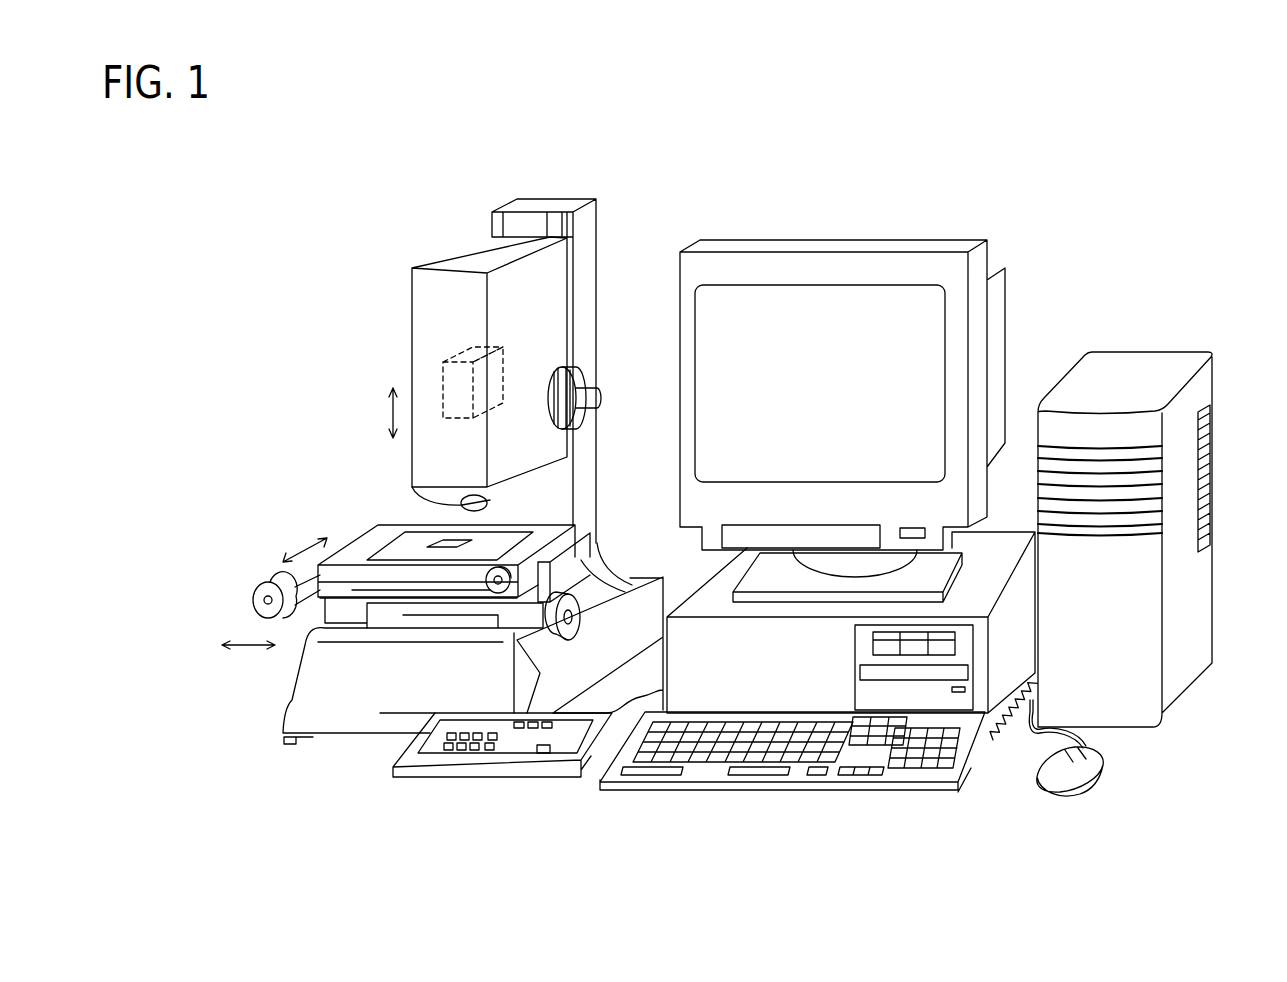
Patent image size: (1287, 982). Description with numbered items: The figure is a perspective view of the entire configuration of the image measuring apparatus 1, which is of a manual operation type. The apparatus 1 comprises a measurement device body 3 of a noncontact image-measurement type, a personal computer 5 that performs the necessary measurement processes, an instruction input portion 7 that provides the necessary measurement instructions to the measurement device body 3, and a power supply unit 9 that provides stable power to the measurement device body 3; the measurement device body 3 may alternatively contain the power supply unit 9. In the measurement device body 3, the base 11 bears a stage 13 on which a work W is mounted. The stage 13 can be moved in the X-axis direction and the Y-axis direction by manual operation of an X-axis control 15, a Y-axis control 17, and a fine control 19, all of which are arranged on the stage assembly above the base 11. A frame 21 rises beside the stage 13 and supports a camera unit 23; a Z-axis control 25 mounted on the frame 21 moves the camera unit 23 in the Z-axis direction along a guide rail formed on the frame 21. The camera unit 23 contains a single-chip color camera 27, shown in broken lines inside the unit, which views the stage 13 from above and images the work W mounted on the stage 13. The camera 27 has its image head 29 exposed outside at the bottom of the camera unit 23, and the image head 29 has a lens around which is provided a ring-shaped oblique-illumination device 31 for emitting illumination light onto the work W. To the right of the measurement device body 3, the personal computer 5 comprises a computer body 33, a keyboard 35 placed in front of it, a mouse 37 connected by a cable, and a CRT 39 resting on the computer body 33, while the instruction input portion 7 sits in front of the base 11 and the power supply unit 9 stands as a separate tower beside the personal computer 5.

The image measuring apparatus 1 is at (225, 189).
The measurement device body 3 is at (569, 188).
The personal computer 5 is at (894, 195).
The instruction input portion 7 is at (518, 748).
The power supply unit 9 is at (1125, 365).
The base 11 is at (333, 722).
The stage 13 is at (497, 537).
The X-axis control 15 is at (581, 618).
The Y-axis control 17 is at (252, 600).
The fine control 19 is at (485, 592).
The frame 21 is at (594, 304).
The camera unit 23 is at (465, 256).
The Z-axis control 25 is at (587, 382).
The single-chip color camera 27 is at (440, 380).
The image head 29 is at (455, 503).
The ring-shaped oblique-illumination device 31 is at (415, 490).
The computer body 33 is at (705, 588).
The keyboard 35 is at (883, 775).
The mouse 37 is at (1083, 780).
The CRT 39 is at (782, 265).
The work W is at (443, 542).